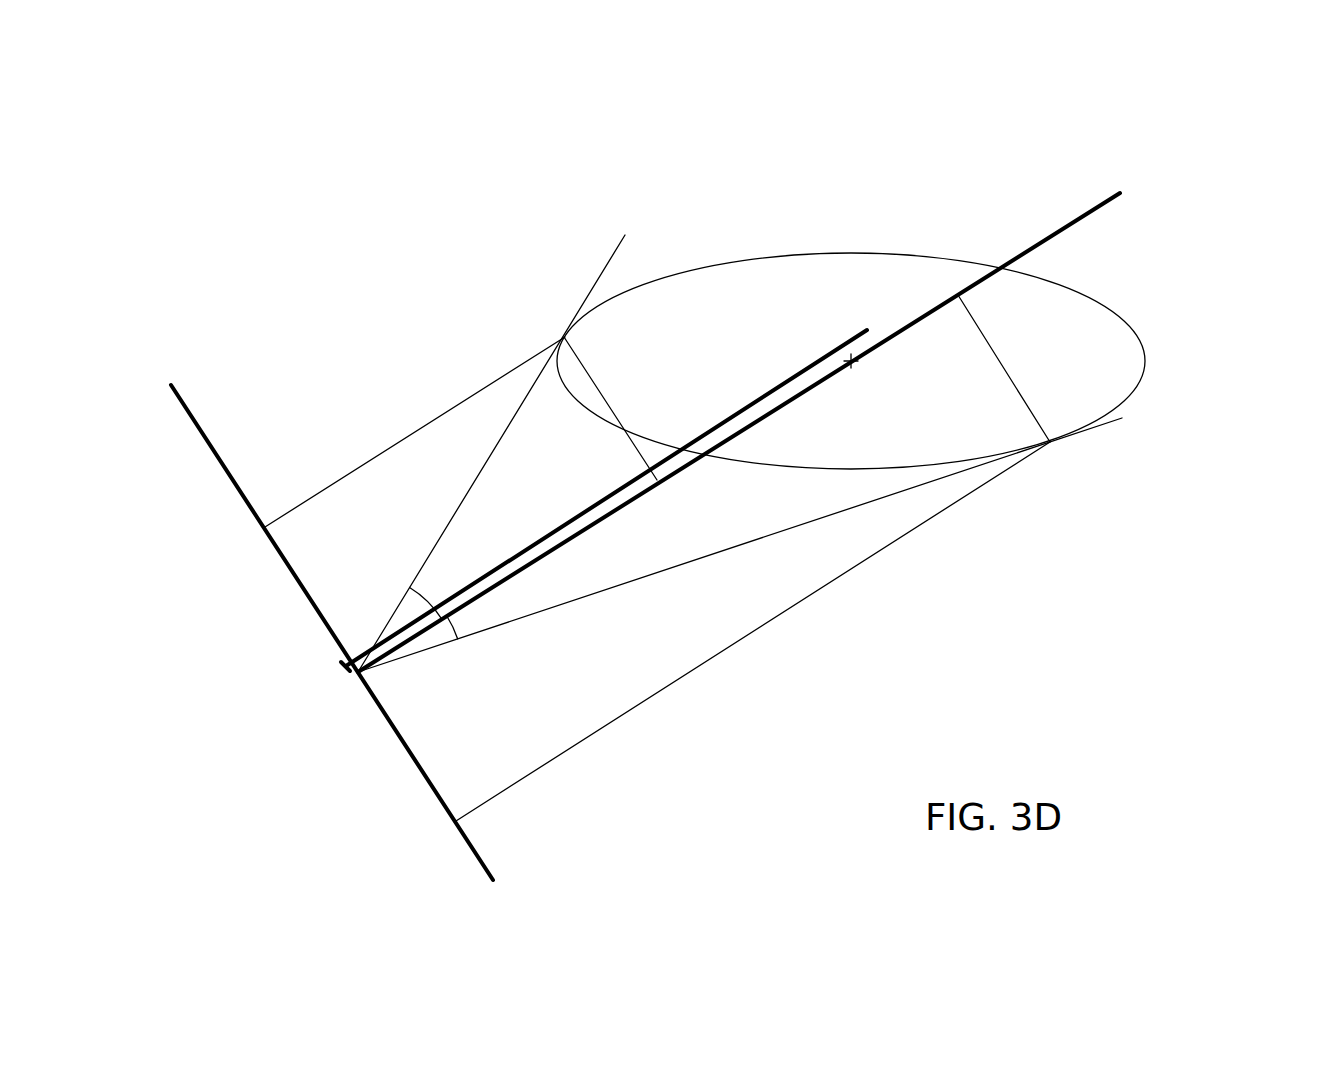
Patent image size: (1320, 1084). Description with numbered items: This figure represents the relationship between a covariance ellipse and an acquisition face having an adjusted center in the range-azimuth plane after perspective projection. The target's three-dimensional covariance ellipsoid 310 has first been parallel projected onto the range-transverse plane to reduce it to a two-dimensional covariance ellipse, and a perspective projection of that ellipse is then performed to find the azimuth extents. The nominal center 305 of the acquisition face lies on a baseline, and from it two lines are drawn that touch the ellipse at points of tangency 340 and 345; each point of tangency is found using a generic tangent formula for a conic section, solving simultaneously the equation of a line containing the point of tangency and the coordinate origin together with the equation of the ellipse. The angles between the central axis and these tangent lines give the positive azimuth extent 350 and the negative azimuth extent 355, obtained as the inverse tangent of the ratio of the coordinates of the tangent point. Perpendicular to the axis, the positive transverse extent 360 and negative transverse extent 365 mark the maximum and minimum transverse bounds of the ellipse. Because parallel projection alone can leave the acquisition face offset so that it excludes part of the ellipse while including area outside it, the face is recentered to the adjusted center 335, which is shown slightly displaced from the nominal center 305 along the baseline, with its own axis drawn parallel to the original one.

The center of the acquisition face 305 is at (353, 686).
The covariance ellipsoid 310 is at (1090, 297).
The adjusted center of the acquisition face 335 is at (340, 663).
The point of tangency 340 is at (556, 323).
The point of tangency 345 is at (1060, 452).
The positive azimuth extent 350 is at (467, 627).
The negative azimuth extent 355 is at (432, 593).
The positive transverse extent 360 is at (1014, 424).
The negative transverse extent 365 is at (630, 410).